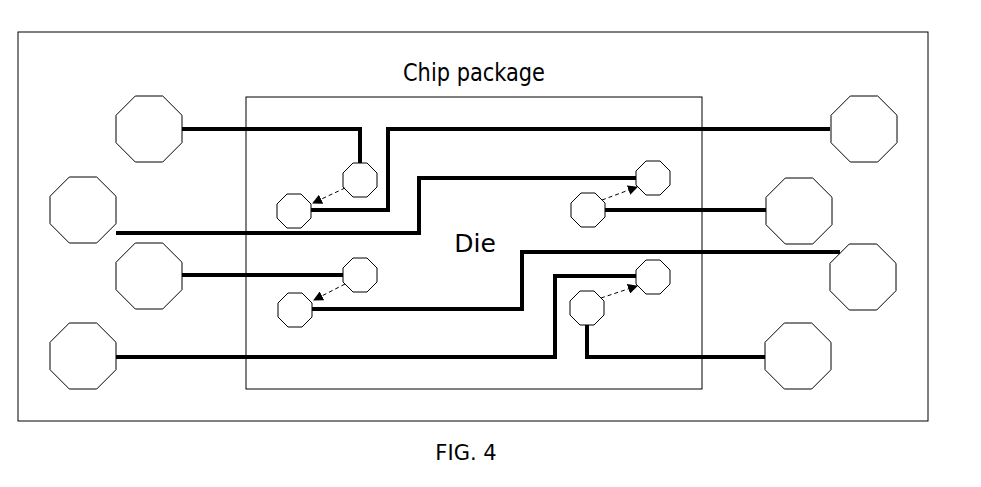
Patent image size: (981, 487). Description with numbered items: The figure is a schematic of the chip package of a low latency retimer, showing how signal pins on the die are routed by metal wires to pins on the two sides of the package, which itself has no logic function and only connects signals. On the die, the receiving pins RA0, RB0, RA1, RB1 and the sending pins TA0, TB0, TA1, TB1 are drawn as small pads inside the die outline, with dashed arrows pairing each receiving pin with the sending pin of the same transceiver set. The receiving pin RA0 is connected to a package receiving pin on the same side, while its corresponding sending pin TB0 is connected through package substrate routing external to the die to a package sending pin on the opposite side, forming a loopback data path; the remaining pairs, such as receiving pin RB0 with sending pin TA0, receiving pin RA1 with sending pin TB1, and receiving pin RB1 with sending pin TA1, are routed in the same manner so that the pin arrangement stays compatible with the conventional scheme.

The receiving pin RA0 on the die RA0 is at (360, 180).
The sending pin TB0 on the die TB0 is at (294, 211).
The sending pin TA0 on the die TA0 is at (653, 178).
The receiving pin RB0 on the die RB0 is at (588, 210).
The receiving pin RA1 on the die RA1 is at (360, 275).
The sending pin TB1 on the die TB1 is at (295, 310).
The sending pin TA1 on the die TA1 is at (653, 277).
The receiving pin RB1 on the die RB1 is at (587, 308).